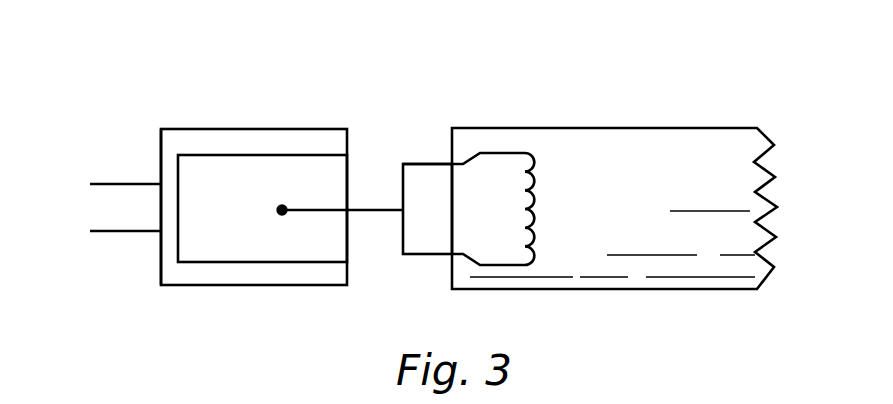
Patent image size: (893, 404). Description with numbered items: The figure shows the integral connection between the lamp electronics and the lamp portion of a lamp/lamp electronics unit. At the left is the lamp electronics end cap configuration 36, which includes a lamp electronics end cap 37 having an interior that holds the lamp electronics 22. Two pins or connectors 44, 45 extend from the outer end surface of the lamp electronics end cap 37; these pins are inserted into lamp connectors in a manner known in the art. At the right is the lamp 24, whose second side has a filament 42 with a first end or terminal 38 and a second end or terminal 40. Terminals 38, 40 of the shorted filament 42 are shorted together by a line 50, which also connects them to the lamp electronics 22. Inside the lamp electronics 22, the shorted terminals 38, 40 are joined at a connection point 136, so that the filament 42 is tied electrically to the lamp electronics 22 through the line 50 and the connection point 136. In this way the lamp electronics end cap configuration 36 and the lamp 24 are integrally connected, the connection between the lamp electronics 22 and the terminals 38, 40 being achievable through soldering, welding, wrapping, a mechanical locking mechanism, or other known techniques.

The lamp electronics 22 is at (300, 172).
The lamp 24 is at (667, 133).
The lamp electronics end cap configuration 36 is at (245, 117).
The lamp electronics end cap 37 is at (160, 146).
The terminal 38 is at (428, 163).
The terminal 40 is at (430, 256).
The filament 42 is at (538, 218).
The pin 44 is at (107, 184).
The pin 45 is at (113, 232).
The line 50 is at (402, 233).
The connection point 136 is at (280, 212).